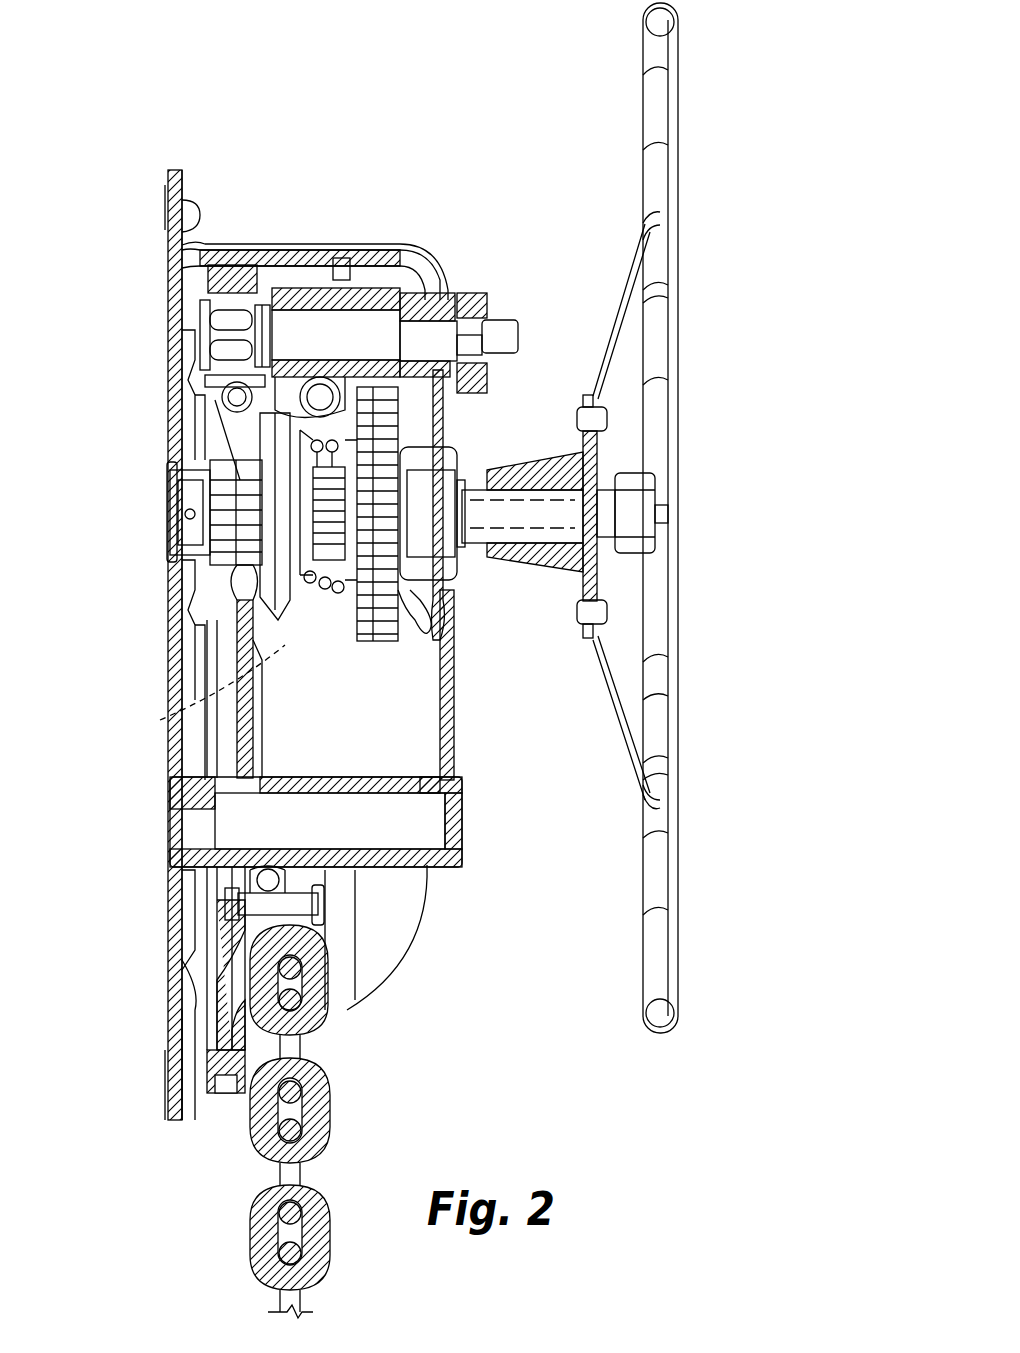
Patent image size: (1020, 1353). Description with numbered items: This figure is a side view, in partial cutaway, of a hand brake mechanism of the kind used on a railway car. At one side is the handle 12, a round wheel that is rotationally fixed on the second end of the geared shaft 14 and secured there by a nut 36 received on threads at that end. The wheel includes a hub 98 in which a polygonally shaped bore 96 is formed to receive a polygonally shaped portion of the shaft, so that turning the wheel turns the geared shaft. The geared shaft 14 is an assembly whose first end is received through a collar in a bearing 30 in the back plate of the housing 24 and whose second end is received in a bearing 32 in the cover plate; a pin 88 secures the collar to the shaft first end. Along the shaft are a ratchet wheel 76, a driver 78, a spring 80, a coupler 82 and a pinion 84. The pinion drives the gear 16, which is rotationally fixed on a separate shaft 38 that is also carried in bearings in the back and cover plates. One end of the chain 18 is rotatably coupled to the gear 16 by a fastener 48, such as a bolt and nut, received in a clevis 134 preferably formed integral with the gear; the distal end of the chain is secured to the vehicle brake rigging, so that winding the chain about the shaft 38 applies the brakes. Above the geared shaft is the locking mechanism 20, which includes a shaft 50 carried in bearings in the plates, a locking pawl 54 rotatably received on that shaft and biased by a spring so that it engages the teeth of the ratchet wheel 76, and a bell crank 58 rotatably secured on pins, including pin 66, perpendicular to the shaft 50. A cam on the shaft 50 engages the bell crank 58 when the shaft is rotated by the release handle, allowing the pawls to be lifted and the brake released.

The handle 12 is at (680, 62).
The geared shaft 14 is at (606, 508).
The gear 16 is at (227, 1098).
The chain 18 is at (322, 1125).
The locking mechanism 20 is at (359, 299).
The housing 24 is at (234, 165).
The bearing 30 is at (180, 552).
The bearing 32 is at (447, 573).
The nut 36 is at (660, 508).
The shaft 38 is at (315, 830).
The fastener 48 is at (322, 903).
The shaft 50 is at (345, 346).
The locking pawl 54 is at (405, 297).
The bell crank 58 is at (213, 365).
The pin 66 is at (236, 397).
The ratchet wheel 76 is at (420, 645).
The driver 78 is at (352, 595).
The spring 80 is at (326, 592).
The coupler 82 is at (236, 676).
The pinion 84 is at (237, 566).
The pin 88 is at (186, 513).
The polygonally shaped bore 96 is at (533, 560).
The hub 98 is at (545, 468).
The clevis 134 is at (312, 925).